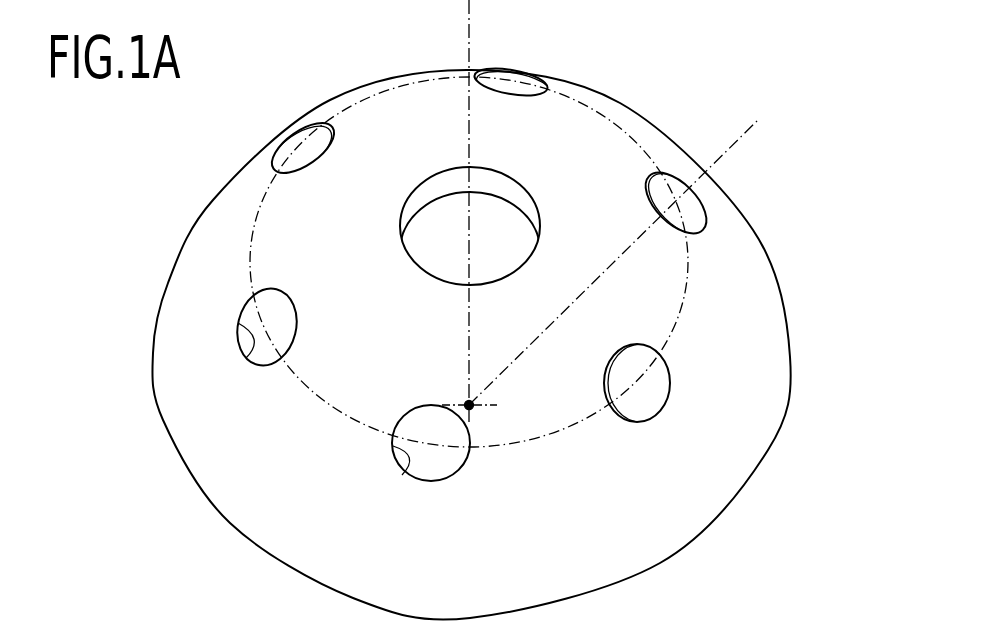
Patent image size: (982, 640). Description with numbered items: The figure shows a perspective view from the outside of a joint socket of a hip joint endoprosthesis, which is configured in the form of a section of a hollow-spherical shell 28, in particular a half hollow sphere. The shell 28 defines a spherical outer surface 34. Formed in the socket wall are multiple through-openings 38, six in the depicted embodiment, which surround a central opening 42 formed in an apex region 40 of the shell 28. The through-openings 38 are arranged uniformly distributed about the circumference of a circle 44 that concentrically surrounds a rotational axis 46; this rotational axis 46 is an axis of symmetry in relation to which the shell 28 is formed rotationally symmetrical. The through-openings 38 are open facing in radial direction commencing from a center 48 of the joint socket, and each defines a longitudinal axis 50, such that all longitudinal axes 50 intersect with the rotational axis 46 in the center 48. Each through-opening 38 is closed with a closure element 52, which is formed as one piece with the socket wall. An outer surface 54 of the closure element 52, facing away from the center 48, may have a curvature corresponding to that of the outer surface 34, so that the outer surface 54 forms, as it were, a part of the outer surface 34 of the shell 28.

The hollow-spherical shell 28 is at (763, 298).
The outer surface 34 is at (646, 525).
The through-openings 38 is at (247, 350).
The apex region 40 is at (522, 155).
The central opening 42 is at (411, 220).
The circle 44 is at (252, 232).
The rotational axis 46 is at (469, 18).
The center 48 is at (472, 410).
The longitudinal axis 50 is at (744, 136).
The closure element 52 is at (652, 394).
The outer surface of the closure element 54 is at (299, 134).